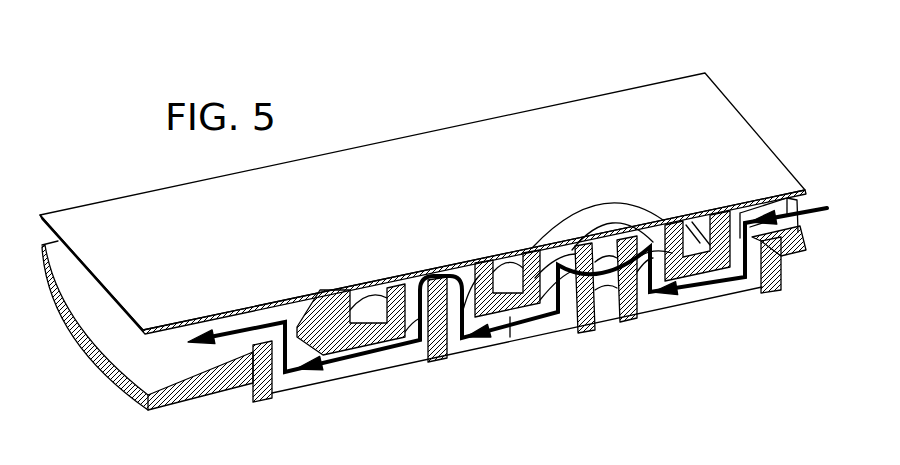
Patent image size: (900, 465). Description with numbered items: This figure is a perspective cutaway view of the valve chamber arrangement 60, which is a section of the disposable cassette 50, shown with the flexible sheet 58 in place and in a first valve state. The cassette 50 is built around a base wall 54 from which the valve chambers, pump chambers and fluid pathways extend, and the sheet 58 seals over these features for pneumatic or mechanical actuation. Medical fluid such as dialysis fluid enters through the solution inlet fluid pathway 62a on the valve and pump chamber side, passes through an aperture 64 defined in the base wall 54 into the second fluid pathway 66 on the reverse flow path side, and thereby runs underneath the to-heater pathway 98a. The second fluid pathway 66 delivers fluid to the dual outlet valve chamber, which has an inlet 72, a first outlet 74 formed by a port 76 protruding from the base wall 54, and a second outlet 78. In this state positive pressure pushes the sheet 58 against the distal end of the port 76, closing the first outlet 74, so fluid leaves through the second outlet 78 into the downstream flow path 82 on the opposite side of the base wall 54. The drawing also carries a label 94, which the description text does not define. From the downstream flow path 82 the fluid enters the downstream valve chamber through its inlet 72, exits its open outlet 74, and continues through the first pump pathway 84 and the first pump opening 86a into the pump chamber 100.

The disposable cassette 50 is at (715, 350).
The base wall 54 is at (365, 343).
The flexible sheet 58 is at (727, 120).
The valve chamber arrangement 60 is at (104, 170).
The solution inlet fluid pathway 62a is at (793, 205).
The aperture 64 is at (780, 283).
The second fluid pathway 66 is at (660, 315).
The inlet 72 is at (640, 247).
The first outlet 74 is at (603, 257).
The port 76 is at (580, 257).
The second outlet 78 is at (567, 327).
The downstream flow path 82 is at (477, 350).
The first pump pathway 84 is at (283, 380).
The first pump opening 86a is at (273, 347).
The fin 94 is at (605, 316).
The to-heater pathway 98a is at (705, 233).
The pump chamber 100 is at (146, 360).